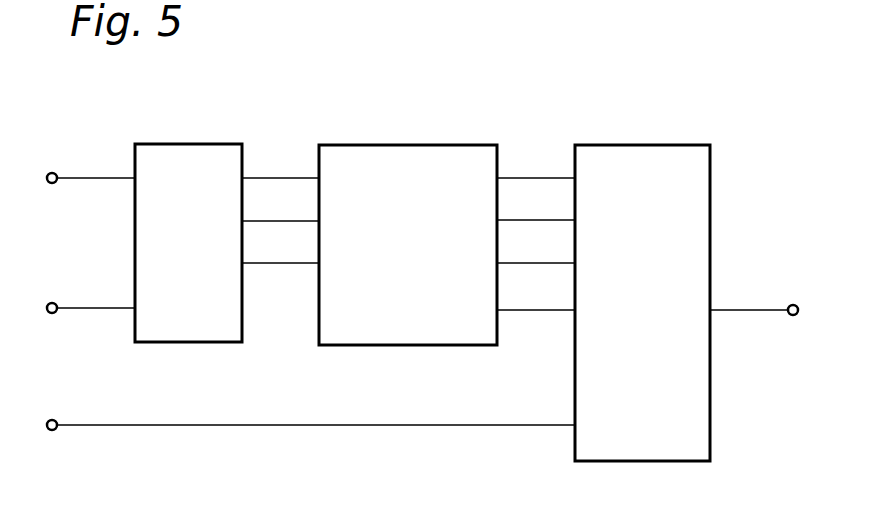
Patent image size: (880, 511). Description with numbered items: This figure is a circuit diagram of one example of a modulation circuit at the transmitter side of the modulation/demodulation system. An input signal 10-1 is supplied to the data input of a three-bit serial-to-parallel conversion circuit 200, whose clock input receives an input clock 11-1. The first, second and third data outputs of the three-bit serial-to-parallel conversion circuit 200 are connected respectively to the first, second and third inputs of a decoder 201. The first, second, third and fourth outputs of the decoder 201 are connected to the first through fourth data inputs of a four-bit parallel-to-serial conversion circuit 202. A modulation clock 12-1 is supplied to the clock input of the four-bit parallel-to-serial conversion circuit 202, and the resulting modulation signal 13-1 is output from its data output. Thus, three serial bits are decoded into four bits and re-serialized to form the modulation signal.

The three-bit serial-to-parallel conversion circuit 200 is at (200, 144).
The decoder 201 is at (406, 145).
The four-bit parallel-to-serial conversion circuit 202 is at (641, 145).
The input signal 10-1 is at (97, 176).
The input clock 11-1 is at (97, 306).
The modulation clock 12-1 is at (97, 423).
The modulation signal 13-1 is at (749, 308).